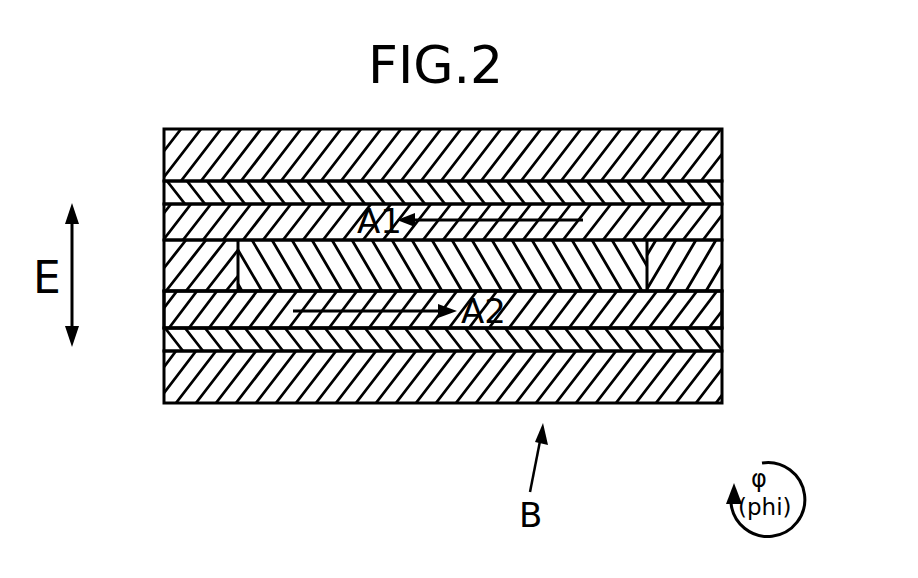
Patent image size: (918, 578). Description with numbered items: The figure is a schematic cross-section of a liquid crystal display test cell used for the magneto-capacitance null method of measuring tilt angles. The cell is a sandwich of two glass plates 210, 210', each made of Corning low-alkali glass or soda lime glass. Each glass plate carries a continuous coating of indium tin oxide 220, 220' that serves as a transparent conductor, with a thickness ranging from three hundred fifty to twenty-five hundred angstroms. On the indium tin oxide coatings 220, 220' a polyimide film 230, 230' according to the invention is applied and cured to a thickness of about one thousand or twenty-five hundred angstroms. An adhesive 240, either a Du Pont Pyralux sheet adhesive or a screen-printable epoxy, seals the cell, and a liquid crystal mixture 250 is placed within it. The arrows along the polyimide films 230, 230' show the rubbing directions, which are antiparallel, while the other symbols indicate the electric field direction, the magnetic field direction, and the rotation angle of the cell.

The glass plate 210 is at (452, 125).
The indium tin oxide coating 220 is at (493, 170).
The polyimide film 230 is at (503, 215).
The adhesive 240 is at (693, 266).
The liquid crystal mixture 250 is at (612, 274).
The polyimide film 230' is at (377, 347).
The indium tin oxide coating 220' is at (399, 392).
The glass plate 210' is at (438, 416).